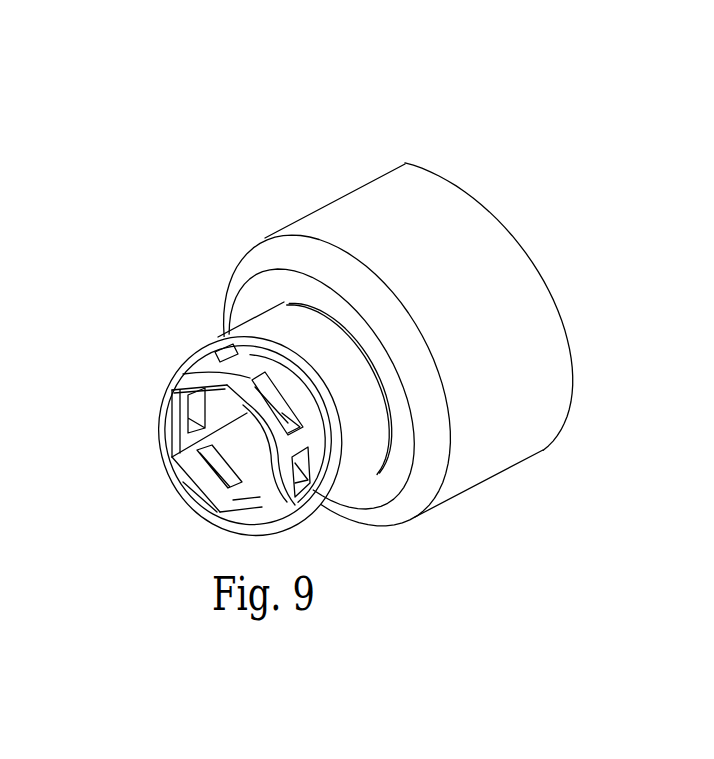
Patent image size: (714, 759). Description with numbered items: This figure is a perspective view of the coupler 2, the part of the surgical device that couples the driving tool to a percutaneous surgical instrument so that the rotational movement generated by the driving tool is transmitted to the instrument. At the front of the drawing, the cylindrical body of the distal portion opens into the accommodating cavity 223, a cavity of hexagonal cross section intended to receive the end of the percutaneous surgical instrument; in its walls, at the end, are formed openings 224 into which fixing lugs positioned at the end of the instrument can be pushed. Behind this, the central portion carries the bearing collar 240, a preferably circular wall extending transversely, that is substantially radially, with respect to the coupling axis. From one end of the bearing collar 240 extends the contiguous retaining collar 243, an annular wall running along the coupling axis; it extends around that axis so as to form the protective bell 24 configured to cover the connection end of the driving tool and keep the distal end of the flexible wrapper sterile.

The coupler 2 is at (390, 112).
The protective bell 24 is at (272, 285).
The bearing collar 240 is at (298, 192).
The retaining collar 243 is at (473, 267).
The accommodating cavity 223 is at (243, 443).
The openings 224 is at (303, 471).